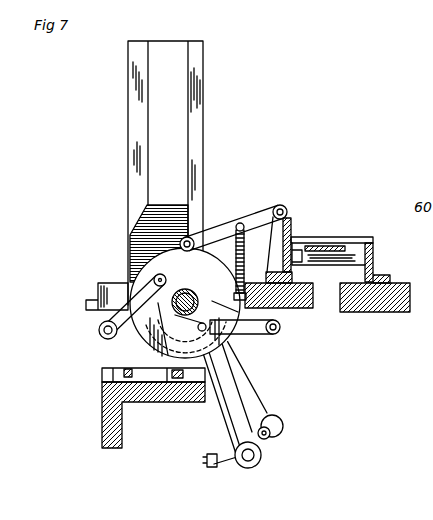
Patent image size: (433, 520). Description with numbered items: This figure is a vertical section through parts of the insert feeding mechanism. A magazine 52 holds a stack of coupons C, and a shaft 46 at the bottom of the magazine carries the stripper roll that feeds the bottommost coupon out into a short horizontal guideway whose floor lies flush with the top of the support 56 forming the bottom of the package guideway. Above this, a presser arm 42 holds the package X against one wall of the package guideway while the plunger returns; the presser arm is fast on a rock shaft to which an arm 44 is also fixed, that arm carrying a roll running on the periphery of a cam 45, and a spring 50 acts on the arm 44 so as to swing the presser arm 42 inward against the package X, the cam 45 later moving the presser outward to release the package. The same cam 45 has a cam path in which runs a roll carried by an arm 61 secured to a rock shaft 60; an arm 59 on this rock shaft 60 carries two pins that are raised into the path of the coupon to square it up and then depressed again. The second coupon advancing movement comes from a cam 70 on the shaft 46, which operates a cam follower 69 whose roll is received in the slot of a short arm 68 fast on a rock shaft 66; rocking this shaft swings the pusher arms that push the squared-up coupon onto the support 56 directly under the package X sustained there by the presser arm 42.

The magazine 52 is at (193, 122).
The coupons C is at (162, 221).
The cam 45 is at (127, 263).
The cam 70 is at (160, 349).
The cam follower 69 is at (242, 388).
The short arm 68 is at (281, 428).
The rock shaft 66 is at (255, 459).
The shaft 46 is at (200, 287).
The arm 59 is at (262, 338).
The arm 61 is at (117, 319).
The rock shaft 60 is at (103, 335).
The arm 44 is at (227, 228).
The spring 50 is at (236, 256).
The presser arm 42 is at (281, 240).
The package X is at (373, 256).
The support 56 is at (338, 314).